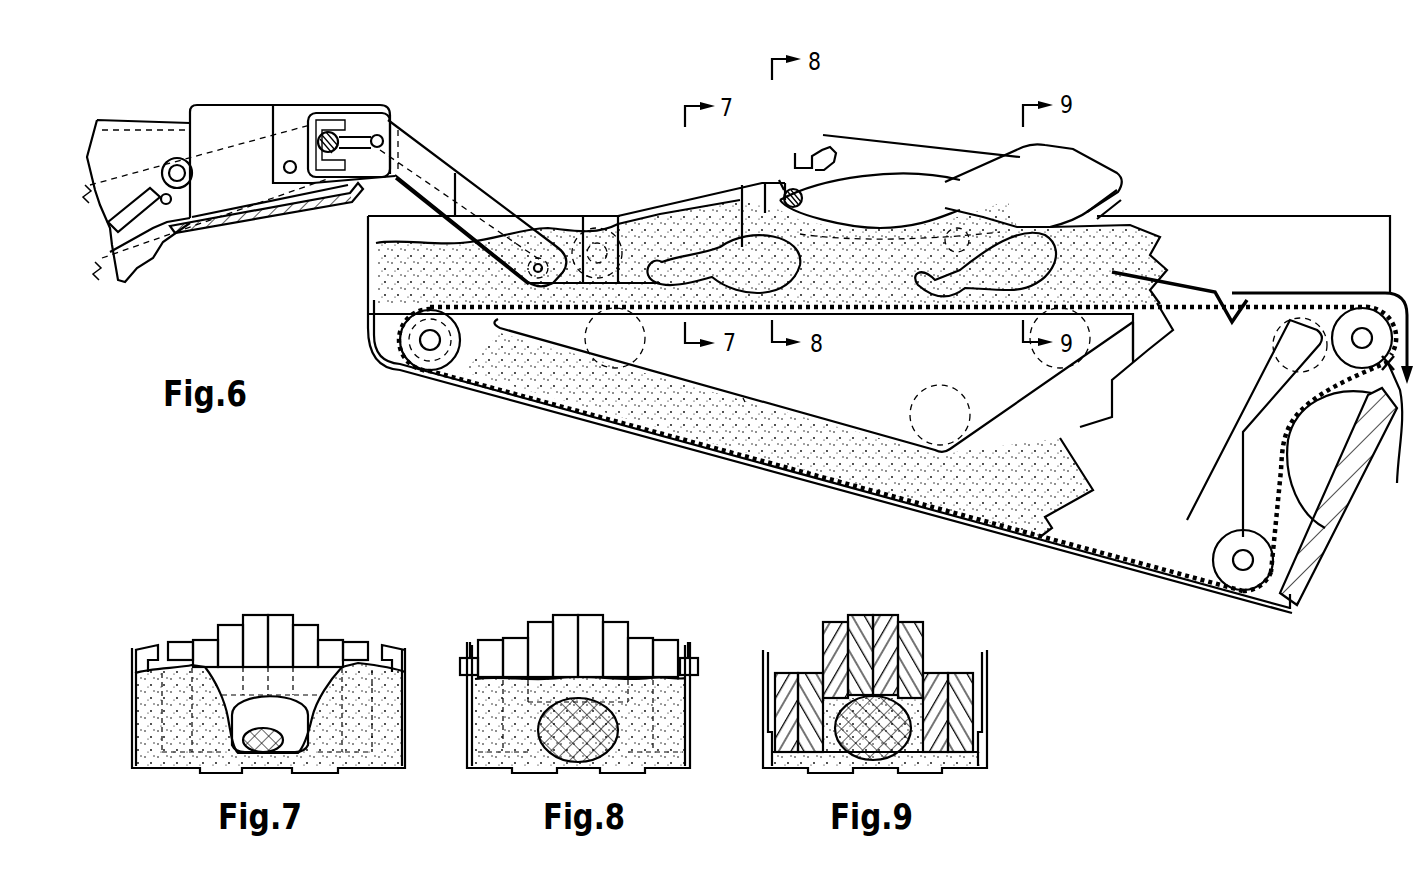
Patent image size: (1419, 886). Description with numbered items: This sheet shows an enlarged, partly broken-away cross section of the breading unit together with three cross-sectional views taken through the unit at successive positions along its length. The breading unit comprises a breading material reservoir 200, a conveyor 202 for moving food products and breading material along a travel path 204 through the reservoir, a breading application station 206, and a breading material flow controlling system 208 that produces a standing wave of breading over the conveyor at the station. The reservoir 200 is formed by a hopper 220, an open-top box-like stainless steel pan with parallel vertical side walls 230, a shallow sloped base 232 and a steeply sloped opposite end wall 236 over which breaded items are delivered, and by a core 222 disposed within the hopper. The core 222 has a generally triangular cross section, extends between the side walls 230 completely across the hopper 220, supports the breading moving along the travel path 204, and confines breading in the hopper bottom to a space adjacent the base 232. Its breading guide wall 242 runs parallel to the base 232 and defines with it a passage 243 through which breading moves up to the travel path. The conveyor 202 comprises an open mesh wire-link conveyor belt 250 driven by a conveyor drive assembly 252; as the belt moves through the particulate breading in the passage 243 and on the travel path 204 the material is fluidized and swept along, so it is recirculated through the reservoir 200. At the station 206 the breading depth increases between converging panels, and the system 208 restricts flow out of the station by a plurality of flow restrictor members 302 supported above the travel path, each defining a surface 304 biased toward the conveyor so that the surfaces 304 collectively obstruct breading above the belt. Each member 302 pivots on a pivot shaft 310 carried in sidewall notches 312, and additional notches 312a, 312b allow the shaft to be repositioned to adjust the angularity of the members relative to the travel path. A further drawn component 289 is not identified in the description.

The breading material reservoir 200 is at (1100, 140).
The conveyor 202 is at (1136, 326).
The travel path 204 is at (1333, 293).
The breading application station 206 is at (924, 205).
The breading material flow controlling system 208 is at (760, 112).
The hopper 220 is at (1003, 538).
The core 222 is at (887, 394).
The side walls 230 is at (1168, 438).
The base 232 is at (630, 441).
The opposite end wall 236 is at (1333, 531).
The breading guide wall 242 is at (743, 398).
The passage 243 is at (573, 421).
The conveyor belt 250 is at (1187, 303).
The conveyor drive assembly 252 is at (1393, 432).
The guide deflector 289 is at (1172, 277).
The flow restrictor member 302 is at (866, 192).
The surface 304 is at (1020, 148).
The pivot shaft 310 is at (784, 193).
The sidewall notches 312 is at (782, 196).
The additional notch 312a is at (775, 178).
The additional notch 312b is at (800, 151).